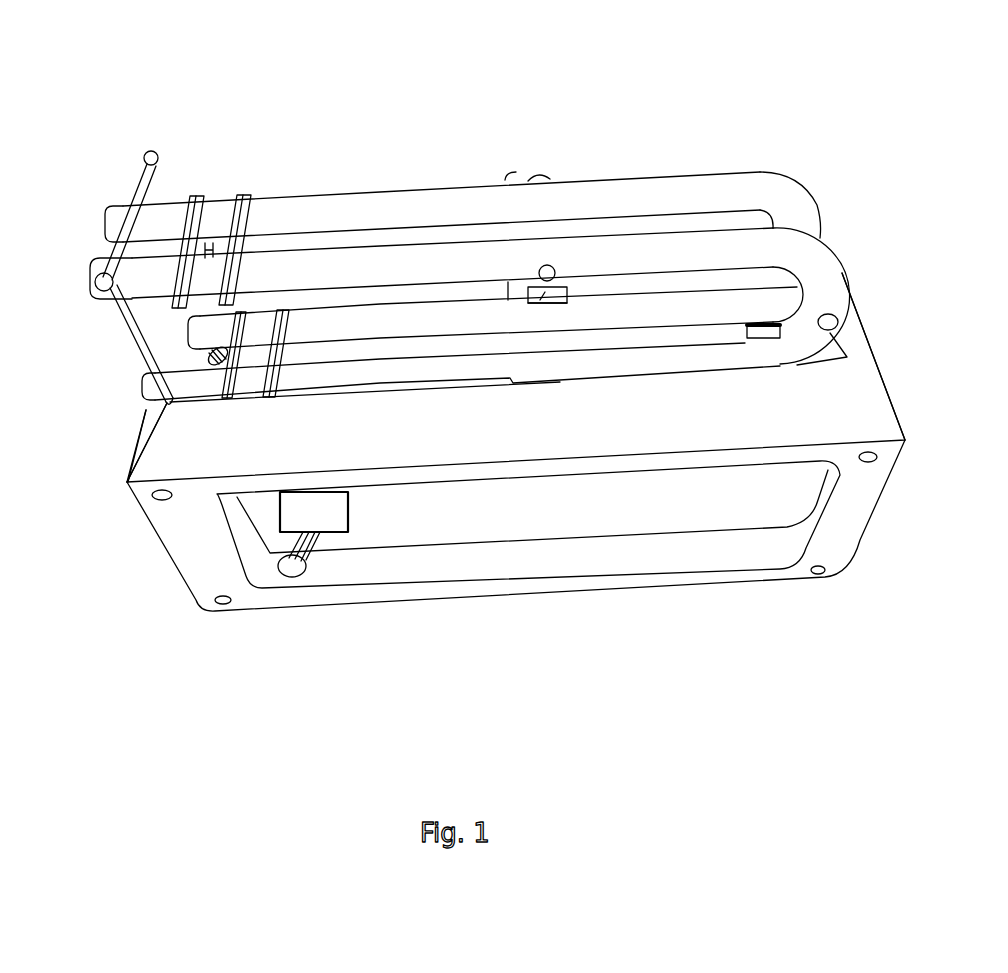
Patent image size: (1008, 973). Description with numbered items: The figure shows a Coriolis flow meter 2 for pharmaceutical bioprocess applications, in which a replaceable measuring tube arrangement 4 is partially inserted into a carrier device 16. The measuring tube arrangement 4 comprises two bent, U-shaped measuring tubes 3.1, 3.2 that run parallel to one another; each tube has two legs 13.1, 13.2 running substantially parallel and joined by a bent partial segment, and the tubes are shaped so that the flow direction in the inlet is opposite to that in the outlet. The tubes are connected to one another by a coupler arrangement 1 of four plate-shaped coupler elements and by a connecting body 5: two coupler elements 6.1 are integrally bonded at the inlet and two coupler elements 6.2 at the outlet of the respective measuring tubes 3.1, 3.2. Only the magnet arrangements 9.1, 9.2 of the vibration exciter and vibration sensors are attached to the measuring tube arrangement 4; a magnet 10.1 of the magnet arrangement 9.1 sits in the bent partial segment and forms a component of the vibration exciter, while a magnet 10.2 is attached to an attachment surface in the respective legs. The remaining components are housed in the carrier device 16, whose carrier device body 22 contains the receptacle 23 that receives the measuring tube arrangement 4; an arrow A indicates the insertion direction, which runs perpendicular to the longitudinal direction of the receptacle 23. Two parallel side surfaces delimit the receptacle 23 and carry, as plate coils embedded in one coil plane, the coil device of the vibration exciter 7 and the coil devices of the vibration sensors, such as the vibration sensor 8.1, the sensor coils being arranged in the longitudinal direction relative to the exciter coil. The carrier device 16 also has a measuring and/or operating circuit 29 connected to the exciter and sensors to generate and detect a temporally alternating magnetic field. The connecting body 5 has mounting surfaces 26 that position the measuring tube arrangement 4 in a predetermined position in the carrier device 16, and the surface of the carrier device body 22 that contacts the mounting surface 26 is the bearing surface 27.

The coupler arrangement 1 is at (190, 183).
The housing 2 is at (808, 142).
The measuring tube 3.1 is at (455, 194).
The measuring tube 3.2 is at (672, 230).
The measuring tube arrangement 4 is at (470, 231).
The connecting body 5 is at (127, 217).
The coupler elements 6.1 is at (195, 245).
The coupler elements 6.2 is at (230, 357).
The vibration exciter 7 is at (763, 325).
The vibration sensor 8.1 is at (547, 285).
The magnet arrangement 9.1 is at (516, 176).
The magnet arrangement 9.2 is at (545, 283).
The magnet 10.1 is at (830, 330).
The magnet 10.2 is at (540, 180).
The first tube leg 13.1 is at (400, 222).
The second tube leg 13.2 is at (400, 277).
The carrier device 16 is at (712, 412).
The carrier device body 22 is at (386, 447).
The receptacle 23 is at (842, 270).
The mounting surfaces 26 is at (96, 272).
The bearing surface 27 is at (128, 483).
The measuring and/or operating circuit 29 is at (313, 534).
The pivot direction A is at (113, 410).